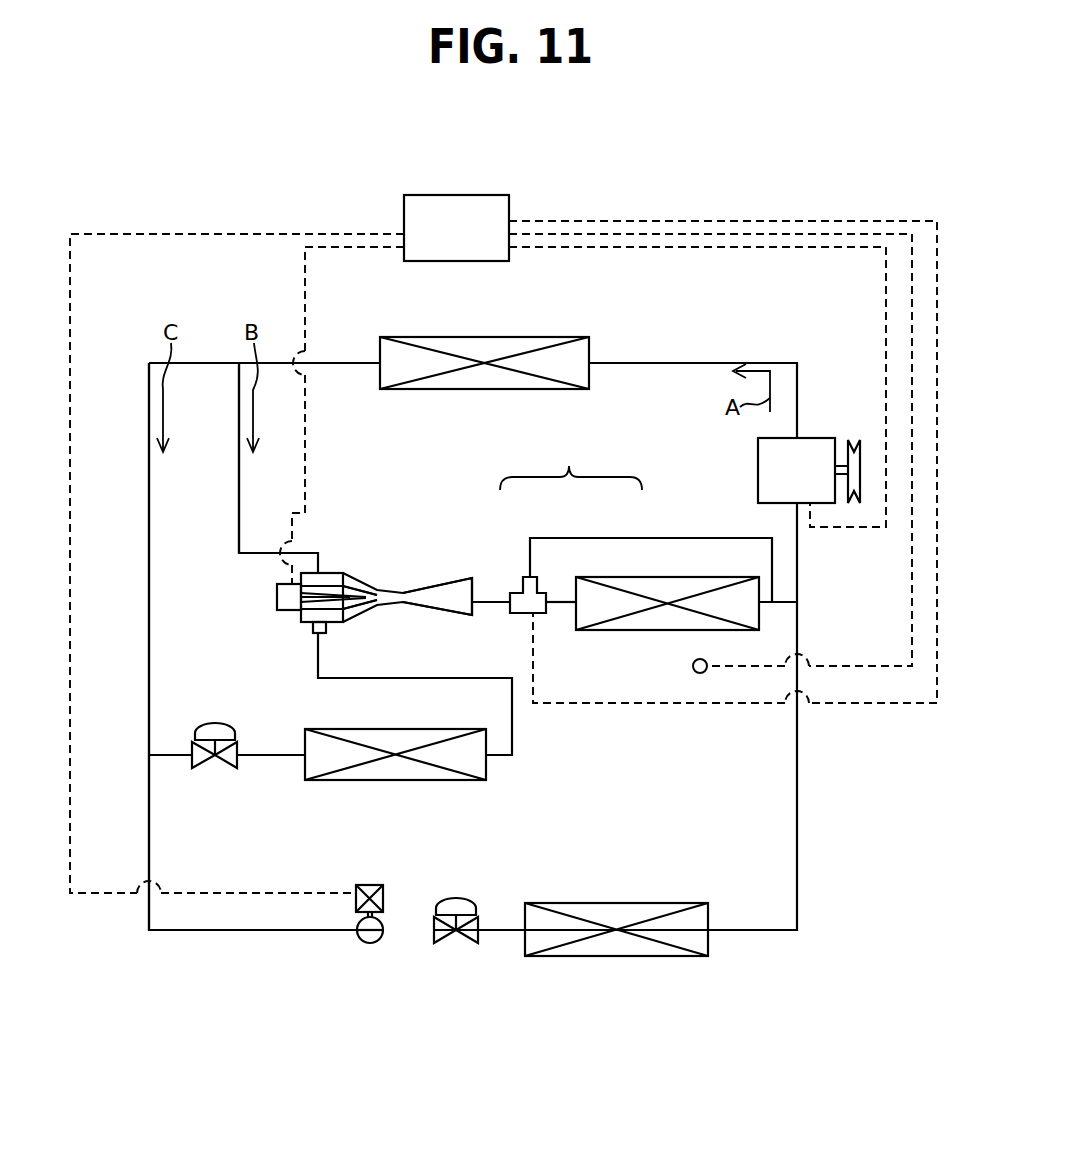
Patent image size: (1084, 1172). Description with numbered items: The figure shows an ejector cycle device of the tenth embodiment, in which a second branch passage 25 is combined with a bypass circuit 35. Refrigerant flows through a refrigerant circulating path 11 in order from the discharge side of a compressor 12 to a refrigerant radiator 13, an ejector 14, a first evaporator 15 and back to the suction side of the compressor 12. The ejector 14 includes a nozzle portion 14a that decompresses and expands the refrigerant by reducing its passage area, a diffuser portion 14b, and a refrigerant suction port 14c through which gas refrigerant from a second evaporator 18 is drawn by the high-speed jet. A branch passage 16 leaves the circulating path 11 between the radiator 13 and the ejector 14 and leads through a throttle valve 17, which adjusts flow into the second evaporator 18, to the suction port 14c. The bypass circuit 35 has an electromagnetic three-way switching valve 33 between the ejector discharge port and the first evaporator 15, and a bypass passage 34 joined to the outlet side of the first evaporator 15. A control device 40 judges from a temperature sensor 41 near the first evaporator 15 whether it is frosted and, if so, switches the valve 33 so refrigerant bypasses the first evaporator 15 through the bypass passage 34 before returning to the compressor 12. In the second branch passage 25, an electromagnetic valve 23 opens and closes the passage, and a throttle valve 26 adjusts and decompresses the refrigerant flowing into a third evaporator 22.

The refrigerant circulating path 11 is at (240, 494).
The compressor 12 is at (808, 438).
The refrigerant radiator 13 is at (468, 337).
The ejector 14 is at (384, 594).
The nozzle portion 14a is at (342, 590).
The diffuser portion 14b is at (437, 615).
The refrigerant suction port 14c is at (328, 628).
The first evaporator 15 is at (660, 577).
The branch passage 16 is at (149, 560).
The throttle valve 17 is at (207, 770).
The second evaporator 18 is at (398, 782).
The third evaporator 22 is at (607, 958).
The electromagnetic valve 23 is at (370, 945).
The second branch passage 25 is at (243, 932).
The throttle valve 26 is at (458, 945).
The electromagnetic three-way switching valve 33 is at (523, 577).
The bypass passage 34 is at (622, 538).
The bypass circuit 35 is at (571, 462).
The control device 40 is at (468, 195).
The temperature sensor 41 is at (693, 666).